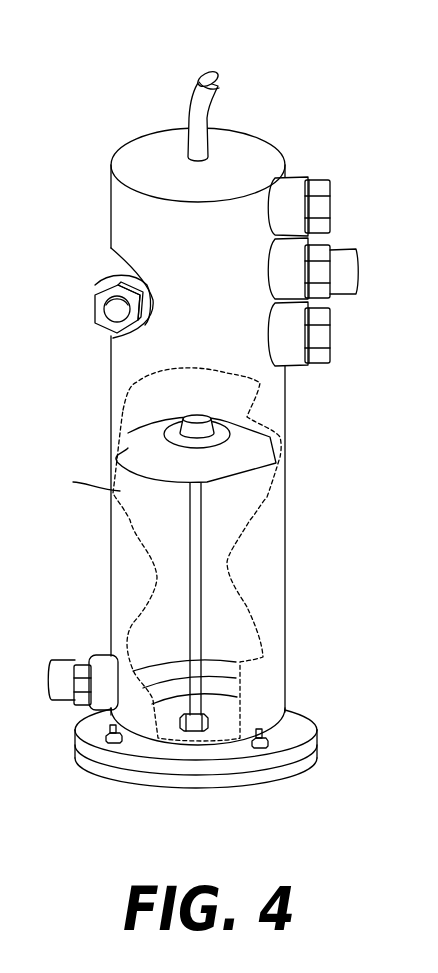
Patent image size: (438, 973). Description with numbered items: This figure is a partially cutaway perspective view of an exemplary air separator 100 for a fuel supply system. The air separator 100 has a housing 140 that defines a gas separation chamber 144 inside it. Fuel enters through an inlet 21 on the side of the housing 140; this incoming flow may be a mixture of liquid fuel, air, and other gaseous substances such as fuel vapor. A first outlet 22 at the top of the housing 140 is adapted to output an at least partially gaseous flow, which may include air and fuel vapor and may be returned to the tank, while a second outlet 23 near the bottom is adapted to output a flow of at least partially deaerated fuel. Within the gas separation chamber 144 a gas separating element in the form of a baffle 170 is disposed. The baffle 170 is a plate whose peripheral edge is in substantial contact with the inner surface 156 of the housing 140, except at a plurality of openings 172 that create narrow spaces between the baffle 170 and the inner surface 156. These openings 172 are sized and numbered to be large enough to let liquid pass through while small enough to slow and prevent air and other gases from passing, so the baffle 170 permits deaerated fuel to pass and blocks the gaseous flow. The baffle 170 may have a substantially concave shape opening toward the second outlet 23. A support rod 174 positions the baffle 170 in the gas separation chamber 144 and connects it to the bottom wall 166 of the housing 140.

The air separator 100 is at (220, 415).
The housing 140 is at (220, 441).
The first outlet 22 is at (197, 100).
The inlet 21 is at (348, 242).
The second outlet 23 is at (64, 659).
The gas separation chamber 144 is at (262, 507).
The inner surface 156 is at (128, 502).
The openings 172 is at (282, 447).
The baffle 170 is at (230, 425).
The support rod 174 is at (193, 613).
The bottom wall 166 is at (227, 725).